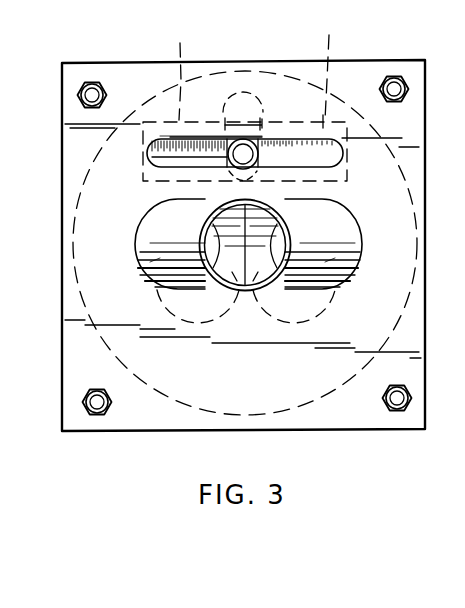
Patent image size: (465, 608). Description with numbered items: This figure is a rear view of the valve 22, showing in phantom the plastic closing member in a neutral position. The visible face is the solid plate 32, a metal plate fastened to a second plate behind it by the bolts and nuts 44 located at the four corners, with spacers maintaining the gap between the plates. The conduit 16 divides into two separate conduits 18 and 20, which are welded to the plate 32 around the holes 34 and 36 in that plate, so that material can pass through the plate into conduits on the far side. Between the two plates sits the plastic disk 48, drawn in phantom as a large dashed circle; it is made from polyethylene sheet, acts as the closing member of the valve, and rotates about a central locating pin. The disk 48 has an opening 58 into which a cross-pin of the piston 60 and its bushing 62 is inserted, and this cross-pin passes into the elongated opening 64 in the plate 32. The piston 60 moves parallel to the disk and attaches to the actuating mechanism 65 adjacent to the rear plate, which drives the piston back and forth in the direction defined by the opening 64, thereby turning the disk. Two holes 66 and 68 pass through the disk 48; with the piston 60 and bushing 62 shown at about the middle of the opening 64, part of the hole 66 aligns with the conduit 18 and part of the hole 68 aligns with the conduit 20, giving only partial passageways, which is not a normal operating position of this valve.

The valve 22 is at (95, 42).
The solid plate 32 is at (362, 62).
The bolts and nuts 44 is at (77, 97).
The plastic disk 48 is at (179, 53).
The actuating mechanism 65 is at (312, 70).
The opening 58 is at (266, 111).
The bushing 62 is at (148, 157).
The opening 64 is at (197, 157).
The piston 60 is at (259, 149).
The conduit 16 is at (210, 216).
The hole 34 is at (162, 233).
The hole 36 is at (322, 229).
The conduit 18 is at (138, 266).
The conduit 20 is at (337, 286).
The hole 66 is at (178, 338).
The hole 68 is at (302, 338).